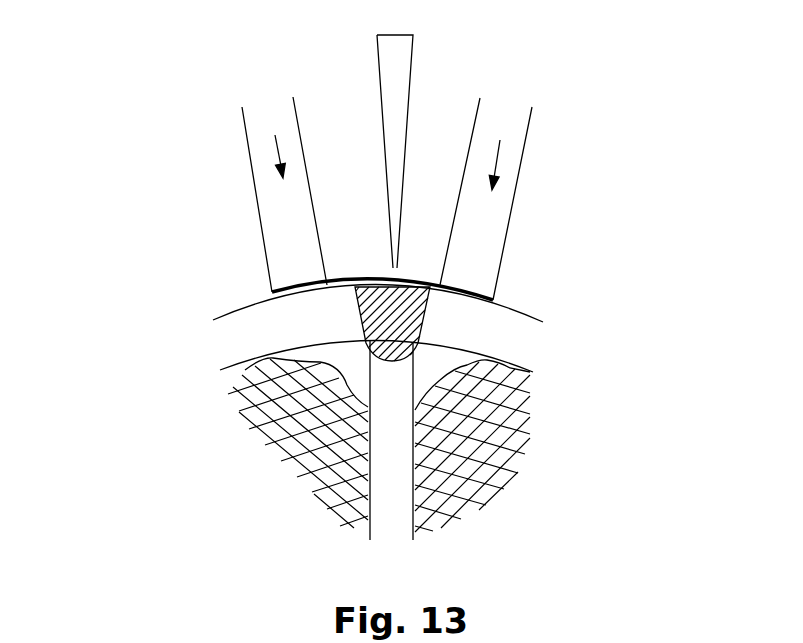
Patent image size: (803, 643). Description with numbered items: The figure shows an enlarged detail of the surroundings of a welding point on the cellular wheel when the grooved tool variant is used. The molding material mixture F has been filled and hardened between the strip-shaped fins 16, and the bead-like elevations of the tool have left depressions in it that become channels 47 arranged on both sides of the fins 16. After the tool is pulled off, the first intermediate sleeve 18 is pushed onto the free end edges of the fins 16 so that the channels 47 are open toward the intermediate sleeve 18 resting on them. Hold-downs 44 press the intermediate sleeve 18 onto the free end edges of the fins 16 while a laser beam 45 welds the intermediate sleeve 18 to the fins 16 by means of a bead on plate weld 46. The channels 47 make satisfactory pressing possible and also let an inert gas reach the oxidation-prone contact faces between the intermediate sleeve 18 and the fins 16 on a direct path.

The fins 16 is at (395, 447).
The first intermediate sleeve 18 is at (518, 338).
The hold-downs 44 is at (262, 150).
The laser beam 45 is at (410, 70).
The bead on plate weld 46 is at (357, 313).
The channels 47 is at (353, 363).
The molding material mixture F is at (280, 423).